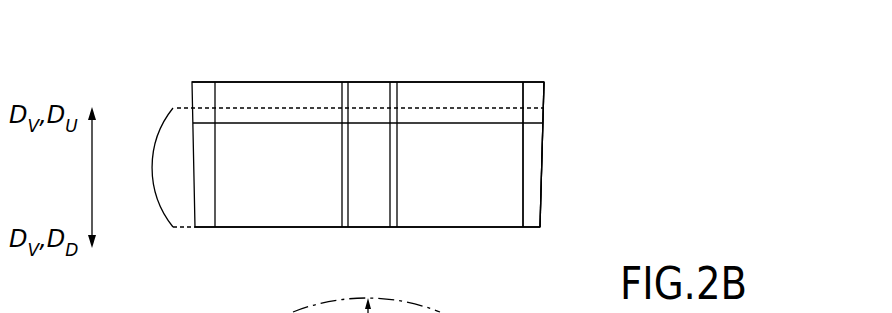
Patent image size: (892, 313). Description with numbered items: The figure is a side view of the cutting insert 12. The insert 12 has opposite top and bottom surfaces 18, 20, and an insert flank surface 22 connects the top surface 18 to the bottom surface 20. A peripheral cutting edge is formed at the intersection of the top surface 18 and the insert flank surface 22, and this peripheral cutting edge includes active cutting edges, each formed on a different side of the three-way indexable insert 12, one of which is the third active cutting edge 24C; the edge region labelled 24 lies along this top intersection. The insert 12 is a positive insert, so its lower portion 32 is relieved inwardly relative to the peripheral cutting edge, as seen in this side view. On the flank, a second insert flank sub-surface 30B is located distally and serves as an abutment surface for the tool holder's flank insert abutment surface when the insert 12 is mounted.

The insert 12 is at (158, 82).
The top surface 18 is at (460, 82).
The edge 24 is at (545, 82).
The insert flank surface 22 is at (543, 152).
The bottom surface 20 is at (460, 227).
The lower portion 32 is at (145, 167).
The third active cutting edge 24C is at (435, 312).
The second insert flank sub-surface 30B is at (216, 312).